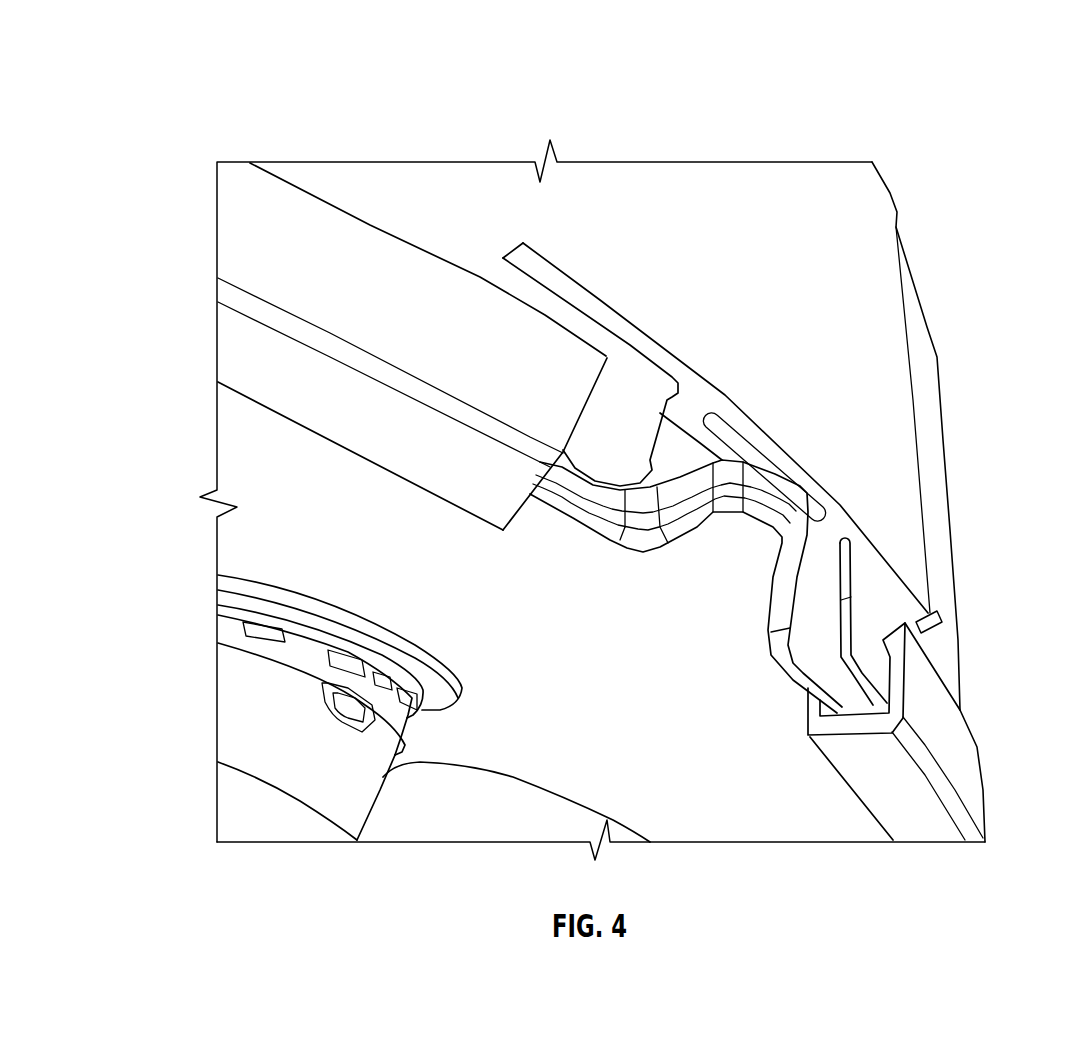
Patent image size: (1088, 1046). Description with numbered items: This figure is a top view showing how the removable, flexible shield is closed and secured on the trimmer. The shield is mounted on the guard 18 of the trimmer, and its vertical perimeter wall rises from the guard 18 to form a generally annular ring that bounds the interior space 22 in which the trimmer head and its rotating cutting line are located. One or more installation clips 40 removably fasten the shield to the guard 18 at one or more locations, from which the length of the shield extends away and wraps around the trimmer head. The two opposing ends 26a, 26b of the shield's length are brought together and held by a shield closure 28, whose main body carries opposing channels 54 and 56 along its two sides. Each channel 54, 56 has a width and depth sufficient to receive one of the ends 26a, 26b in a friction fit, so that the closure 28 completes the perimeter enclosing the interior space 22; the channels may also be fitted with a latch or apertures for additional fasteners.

The guard 18 is at (327, 522).
The interior space 22 is at (250, 667).
The first end of the shield 26a is at (613, 355).
The second end of the shield 26b is at (863, 637).
The shield closure 28 is at (858, 292).
The installation clip 40 is at (300, 298).
The first channel 54 is at (543, 277).
The second channel 56 is at (897, 565).